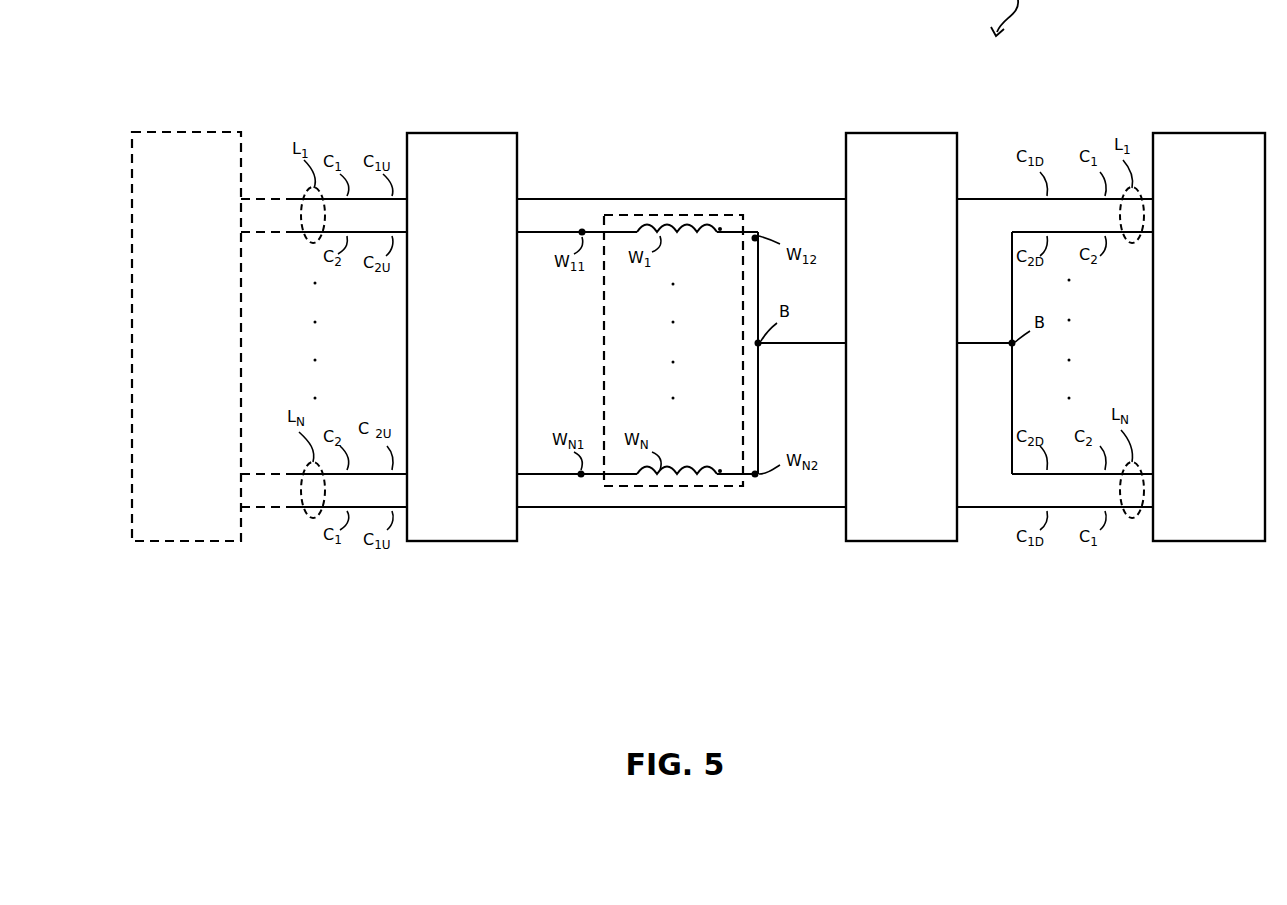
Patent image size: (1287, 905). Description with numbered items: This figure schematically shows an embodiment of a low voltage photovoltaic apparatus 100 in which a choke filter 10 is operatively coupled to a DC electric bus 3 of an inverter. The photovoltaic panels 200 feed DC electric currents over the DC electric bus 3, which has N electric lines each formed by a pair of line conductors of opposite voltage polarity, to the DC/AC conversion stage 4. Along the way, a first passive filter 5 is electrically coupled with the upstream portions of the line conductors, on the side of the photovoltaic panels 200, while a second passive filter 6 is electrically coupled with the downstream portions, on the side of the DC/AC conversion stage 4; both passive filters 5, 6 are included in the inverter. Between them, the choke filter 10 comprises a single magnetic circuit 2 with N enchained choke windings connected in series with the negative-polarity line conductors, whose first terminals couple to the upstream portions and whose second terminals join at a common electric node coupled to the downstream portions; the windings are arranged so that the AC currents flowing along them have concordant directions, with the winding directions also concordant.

The photovoltaic apparatus 100 is at (648, 606).
The photovoltaic panels 200 is at (198, 120).
The first passive filter 5 is at (449, 108).
The choke filter 10 is at (698, 198).
The DC electric bus 3 is at (791, 184).
The magnetic circuit 2 is at (686, 488).
The second passive filter 6 is at (883, 108).
The DC/AC conversion stage 4 is at (1189, 108).